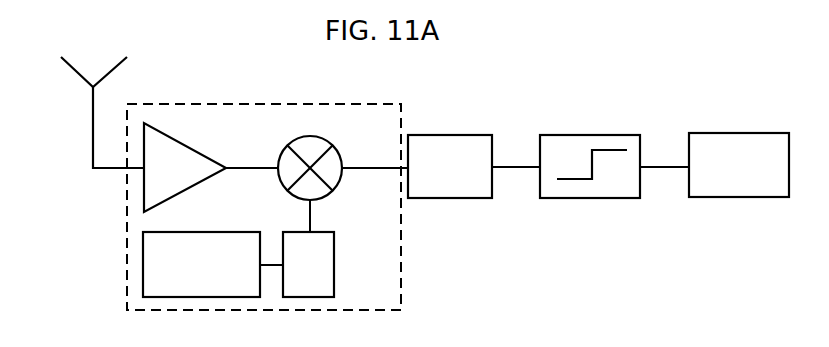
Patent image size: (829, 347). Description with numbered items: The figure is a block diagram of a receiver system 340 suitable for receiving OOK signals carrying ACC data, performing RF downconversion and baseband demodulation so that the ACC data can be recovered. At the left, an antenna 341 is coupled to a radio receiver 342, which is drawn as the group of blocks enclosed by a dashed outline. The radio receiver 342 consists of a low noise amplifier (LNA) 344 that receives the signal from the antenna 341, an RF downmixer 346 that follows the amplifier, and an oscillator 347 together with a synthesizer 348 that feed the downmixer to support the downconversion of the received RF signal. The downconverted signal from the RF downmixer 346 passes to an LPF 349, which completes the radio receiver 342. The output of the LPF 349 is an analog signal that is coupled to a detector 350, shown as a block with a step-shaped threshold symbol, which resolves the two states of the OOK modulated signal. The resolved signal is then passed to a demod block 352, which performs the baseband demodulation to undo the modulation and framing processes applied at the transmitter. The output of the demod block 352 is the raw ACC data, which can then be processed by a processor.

The receiver system 340 is at (63, 184).
The antenna 341 is at (91, 122).
The radio receiver 342 is at (127, 233).
The low noise amplifier (LNA) 344 is at (184, 143).
The RF downmixer 346 is at (310, 136).
The oscillator 347 is at (243, 232).
The synthesizer 348 is at (334, 264).
The LPF 349 is at (449, 135).
The detector 350 is at (590, 135).
The demod block 352 is at (739, 133).